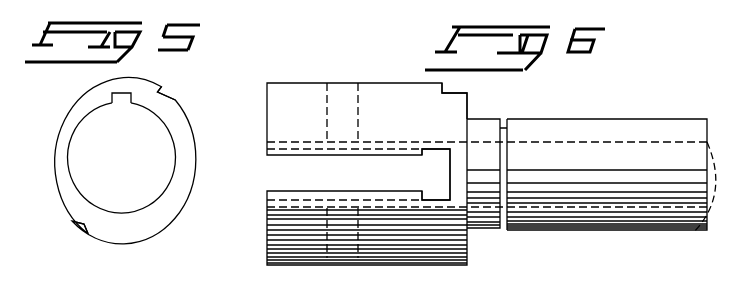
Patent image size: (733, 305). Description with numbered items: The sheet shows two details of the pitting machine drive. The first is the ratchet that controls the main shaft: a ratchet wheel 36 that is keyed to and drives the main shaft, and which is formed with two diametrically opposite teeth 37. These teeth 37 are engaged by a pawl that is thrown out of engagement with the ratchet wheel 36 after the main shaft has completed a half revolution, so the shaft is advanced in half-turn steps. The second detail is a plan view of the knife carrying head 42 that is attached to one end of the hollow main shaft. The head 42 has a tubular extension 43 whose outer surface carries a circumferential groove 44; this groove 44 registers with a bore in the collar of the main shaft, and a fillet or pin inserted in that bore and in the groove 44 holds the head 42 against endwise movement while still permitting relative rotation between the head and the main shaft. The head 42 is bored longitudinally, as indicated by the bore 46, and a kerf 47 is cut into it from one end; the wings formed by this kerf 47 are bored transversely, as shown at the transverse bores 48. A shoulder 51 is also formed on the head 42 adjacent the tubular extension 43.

In FIG. 5, the ratchet wheel 36 is at (176, 183).
In FIG. 5, the teeth 37 is at (163, 95).
In FIG. 6, the knife carrying head 42 is at (297, 227).
In FIG. 6, the tubular extension 43 is at (637, 130).
In FIG. 6, the circumferential groove 44 is at (505, 120).
In FIG. 6, the longitudinal bore 46 is at (694, 200).
In FIG. 6, the kerf 47 is at (388, 174).
In FIG. 6, the transverse bores 48 is at (347, 253).
In FIG. 6, the shoulder 51 is at (470, 103).